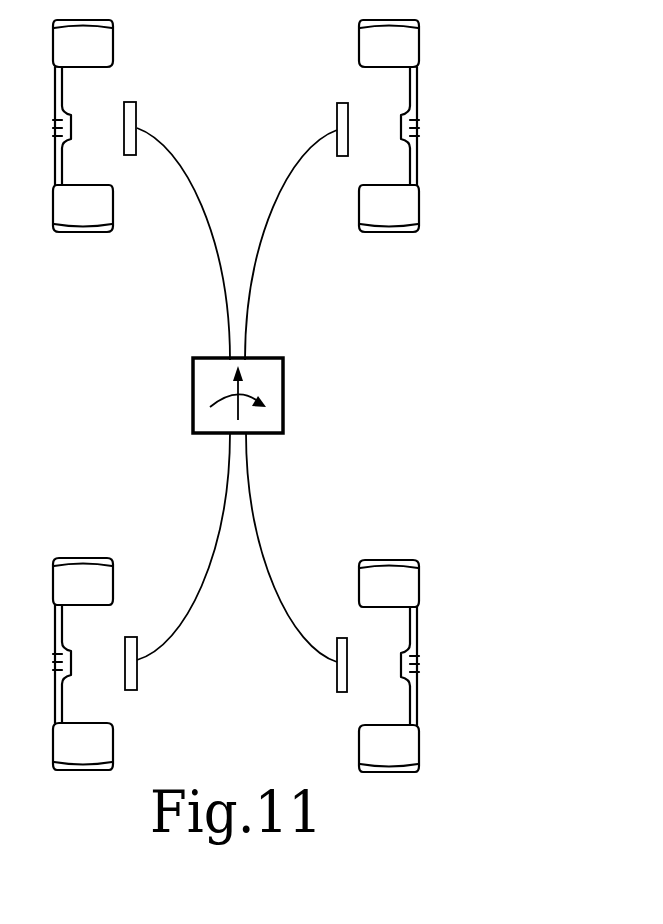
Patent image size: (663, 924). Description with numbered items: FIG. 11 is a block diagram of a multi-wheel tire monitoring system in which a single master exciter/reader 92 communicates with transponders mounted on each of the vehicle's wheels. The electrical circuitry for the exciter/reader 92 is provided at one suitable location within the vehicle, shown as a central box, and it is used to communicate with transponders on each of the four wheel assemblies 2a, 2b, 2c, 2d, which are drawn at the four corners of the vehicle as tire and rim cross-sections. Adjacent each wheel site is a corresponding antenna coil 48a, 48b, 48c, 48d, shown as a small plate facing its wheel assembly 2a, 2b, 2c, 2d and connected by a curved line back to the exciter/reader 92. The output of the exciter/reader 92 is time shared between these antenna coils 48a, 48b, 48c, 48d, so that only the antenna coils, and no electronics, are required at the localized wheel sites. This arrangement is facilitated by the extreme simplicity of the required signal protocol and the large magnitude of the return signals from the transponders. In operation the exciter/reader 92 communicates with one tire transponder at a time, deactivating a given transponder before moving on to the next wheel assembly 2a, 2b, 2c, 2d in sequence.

The wheel assembly 2a is at (84, 108).
The wheel assembly 2b is at (389, 115).
The wheel assembly 2c is at (387, 683).
The wheel assembly 2d is at (84, 674).
The antenna coil 48a is at (137, 117).
The antenna coil 48b is at (337, 123).
The antenna coil 48c is at (337, 677).
The antenna coil 48d is at (137, 675).
The exciter/reader 92 is at (284, 398).